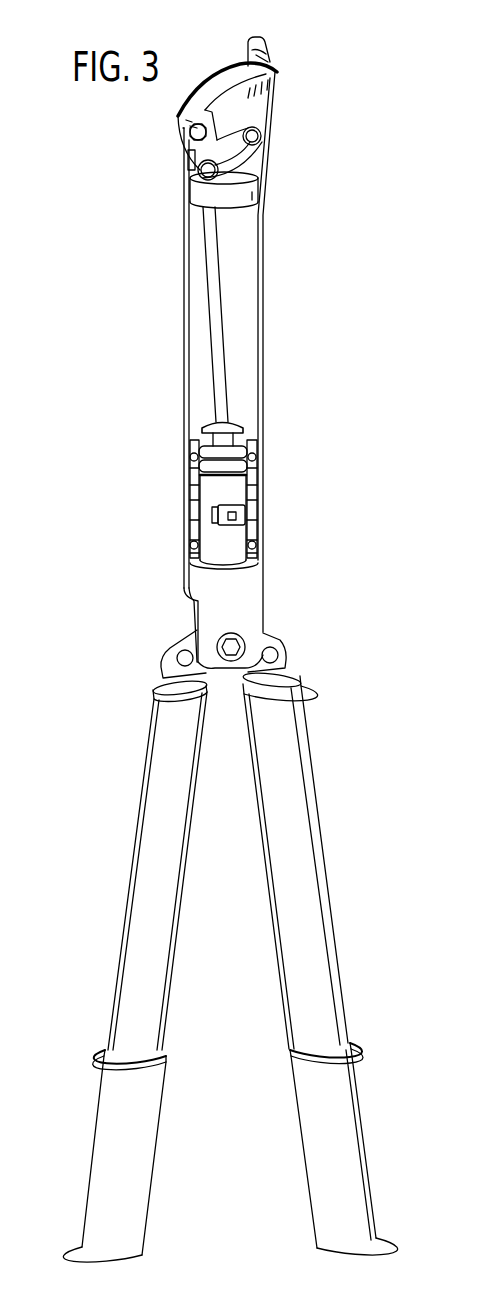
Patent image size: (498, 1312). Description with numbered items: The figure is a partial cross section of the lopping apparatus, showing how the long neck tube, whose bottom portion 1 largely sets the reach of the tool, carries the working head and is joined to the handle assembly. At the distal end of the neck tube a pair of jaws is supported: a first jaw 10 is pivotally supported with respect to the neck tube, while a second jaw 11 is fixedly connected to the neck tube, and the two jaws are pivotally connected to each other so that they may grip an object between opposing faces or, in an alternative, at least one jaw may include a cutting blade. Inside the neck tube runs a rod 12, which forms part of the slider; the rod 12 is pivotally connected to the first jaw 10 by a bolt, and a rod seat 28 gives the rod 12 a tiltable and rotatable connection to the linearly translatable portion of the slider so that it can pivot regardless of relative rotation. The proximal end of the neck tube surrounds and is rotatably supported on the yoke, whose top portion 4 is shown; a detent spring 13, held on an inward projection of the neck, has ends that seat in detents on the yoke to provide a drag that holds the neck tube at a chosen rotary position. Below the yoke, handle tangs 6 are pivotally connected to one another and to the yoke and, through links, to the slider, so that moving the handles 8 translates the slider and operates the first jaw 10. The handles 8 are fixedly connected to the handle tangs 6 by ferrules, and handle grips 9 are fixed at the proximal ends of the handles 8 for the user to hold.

The bottom portion of the neck tube 1 is at (187, 290).
The top portion of the yoke 4 is at (248, 581).
The handle tangs 6 is at (160, 670).
The handles 8 is at (142, 864).
The handle grips 9 is at (100, 1163).
The first jaw 10 is at (228, 90).
The second jaw 11 is at (264, 50).
The rod 12 is at (223, 313).
The detent spring 13 is at (245, 512).
The rod seat 28 is at (236, 430).